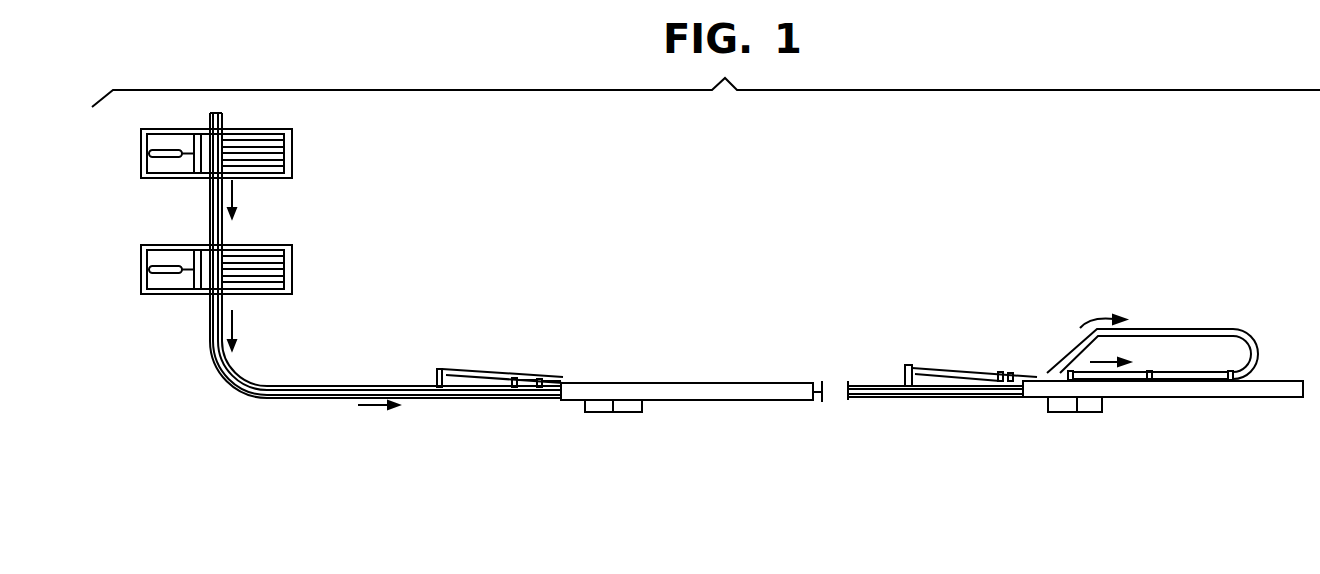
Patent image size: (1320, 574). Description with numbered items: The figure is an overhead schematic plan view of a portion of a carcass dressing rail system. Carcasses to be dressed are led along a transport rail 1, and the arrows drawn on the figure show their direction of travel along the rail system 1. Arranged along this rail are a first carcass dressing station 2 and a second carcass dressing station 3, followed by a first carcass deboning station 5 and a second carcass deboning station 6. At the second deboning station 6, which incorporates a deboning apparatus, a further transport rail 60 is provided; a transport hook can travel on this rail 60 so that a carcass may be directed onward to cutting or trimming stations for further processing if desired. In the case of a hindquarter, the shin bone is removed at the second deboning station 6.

The transport rail 1 is at (310, 386).
The first carcass dressing station 2 is at (316, 153).
The second carcass dressing station 3 is at (315, 271).
The first carcass deboning station 5 is at (537, 354).
The second carcass deboning station 6 is at (966, 350).
The further transport rail 60 is at (1178, 329).